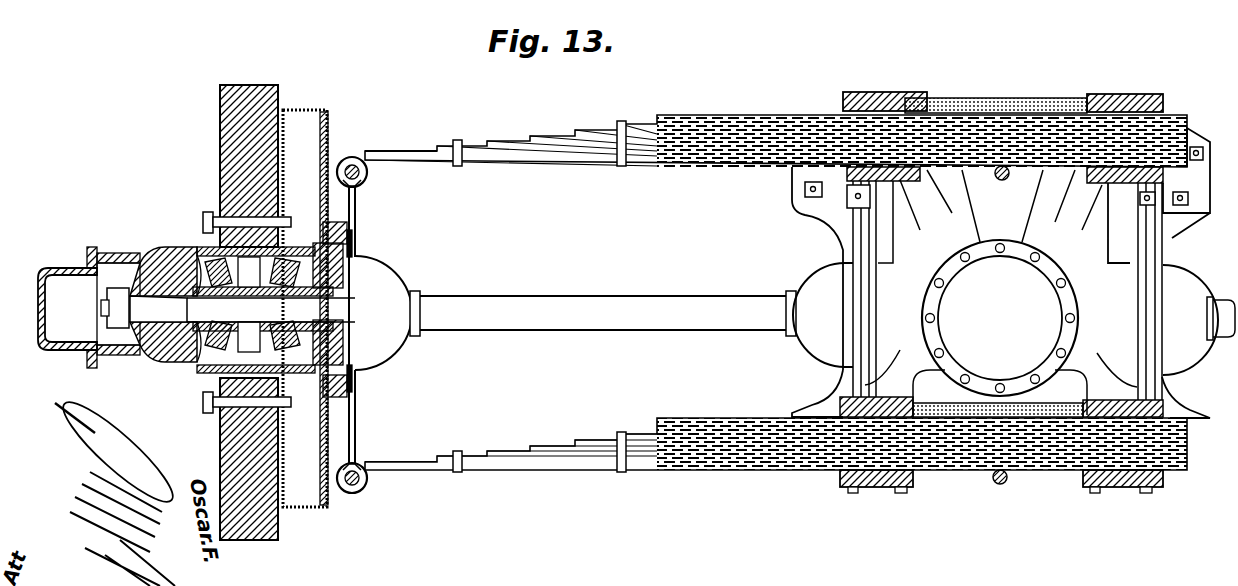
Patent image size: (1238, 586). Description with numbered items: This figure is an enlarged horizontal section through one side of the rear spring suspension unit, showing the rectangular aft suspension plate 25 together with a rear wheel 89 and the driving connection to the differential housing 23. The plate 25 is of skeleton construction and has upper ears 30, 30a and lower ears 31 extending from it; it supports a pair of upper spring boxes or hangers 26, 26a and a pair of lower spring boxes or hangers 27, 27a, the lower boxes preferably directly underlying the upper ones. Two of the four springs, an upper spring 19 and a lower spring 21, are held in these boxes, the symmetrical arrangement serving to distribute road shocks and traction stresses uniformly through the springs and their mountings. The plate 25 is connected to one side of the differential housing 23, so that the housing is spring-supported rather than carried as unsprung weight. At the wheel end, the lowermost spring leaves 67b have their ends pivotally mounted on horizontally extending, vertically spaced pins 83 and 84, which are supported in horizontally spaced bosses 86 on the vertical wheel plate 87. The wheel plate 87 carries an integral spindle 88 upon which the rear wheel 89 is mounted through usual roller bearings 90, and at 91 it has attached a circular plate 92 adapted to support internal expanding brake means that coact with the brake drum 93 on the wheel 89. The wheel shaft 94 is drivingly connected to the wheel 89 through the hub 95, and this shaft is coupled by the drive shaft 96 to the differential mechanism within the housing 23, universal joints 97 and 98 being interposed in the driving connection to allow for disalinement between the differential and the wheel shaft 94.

The spring 19 is at (690, 125).
The spring 21 is at (676, 428).
The differential housing 23 is at (1001, 292).
The aft suspension plate 25 is at (1163, 252).
The upper spring box 26 is at (885, 100).
The upper spring box 26a is at (1130, 104).
The lower spring box 27 is at (870, 488).
The lower spring box 27a is at (1128, 488).
The upper ear 30 is at (797, 178).
The upper ear 30a is at (1205, 188).
The lower ear 31 is at (808, 400).
The spring leaf 67b is at (520, 164).
The pin 83 is at (362, 160).
The pin 84 is at (360, 466).
The boss 86 is at (368, 174).
The wheel plate 87 is at (350, 418).
The spindle 88 is at (271, 308).
The rear wheel 89 is at (220, 107).
The roller bearing 90 is at (215, 358).
The attachment 91 is at (350, 240).
The circular plate 92 is at (330, 125).
The brake drum 93 is at (300, 112).
The wheel shaft 94 is at (205, 345).
The hub 95 is at (160, 262).
The drive shaft 96 is at (558, 302).
The universal joint 97 is at (819, 315).
The universal joint 98 is at (387, 313).